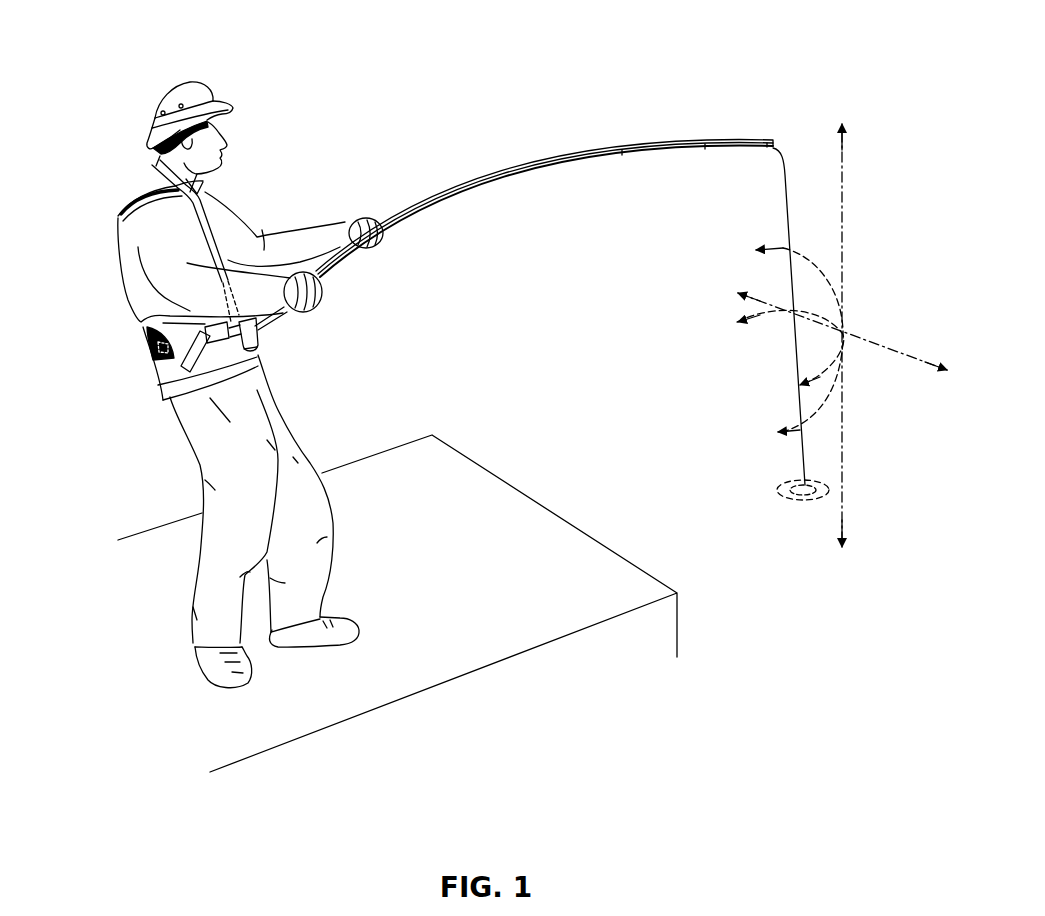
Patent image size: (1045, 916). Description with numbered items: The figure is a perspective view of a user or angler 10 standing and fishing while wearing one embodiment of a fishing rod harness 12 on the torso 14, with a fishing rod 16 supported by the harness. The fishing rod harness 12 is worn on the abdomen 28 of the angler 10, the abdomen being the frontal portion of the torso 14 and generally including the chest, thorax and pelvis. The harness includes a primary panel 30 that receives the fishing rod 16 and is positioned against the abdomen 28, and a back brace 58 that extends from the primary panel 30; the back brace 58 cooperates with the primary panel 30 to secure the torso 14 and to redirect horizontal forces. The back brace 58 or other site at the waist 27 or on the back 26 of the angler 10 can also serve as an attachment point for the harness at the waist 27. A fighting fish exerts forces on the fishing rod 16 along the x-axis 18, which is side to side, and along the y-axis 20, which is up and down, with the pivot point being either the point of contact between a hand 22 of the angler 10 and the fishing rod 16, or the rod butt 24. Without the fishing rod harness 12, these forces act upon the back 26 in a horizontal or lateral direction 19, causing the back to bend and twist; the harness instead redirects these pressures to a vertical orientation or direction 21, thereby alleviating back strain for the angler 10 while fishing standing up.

The user/angler 10 is at (292, 90).
The fishing rod harness 12 is at (268, 344).
The torso 14 is at (76, 199).
The fishing rod 16 is at (483, 180).
The x-axis 18 is at (760, 322).
The horizontal or lateral direction 19 is at (757, 297).
The y-axis 20 is at (783, 247).
The vertical orientation or direction 21 is at (841, 157).
The hand 22 is at (372, 250).
The rod butt 24 is at (260, 337).
The back 26 is at (122, 259).
The waist 27 is at (160, 388).
The abdomen 28 is at (250, 233).
The primary panel 30 is at (256, 352).
The back brace 58 is at (150, 343).